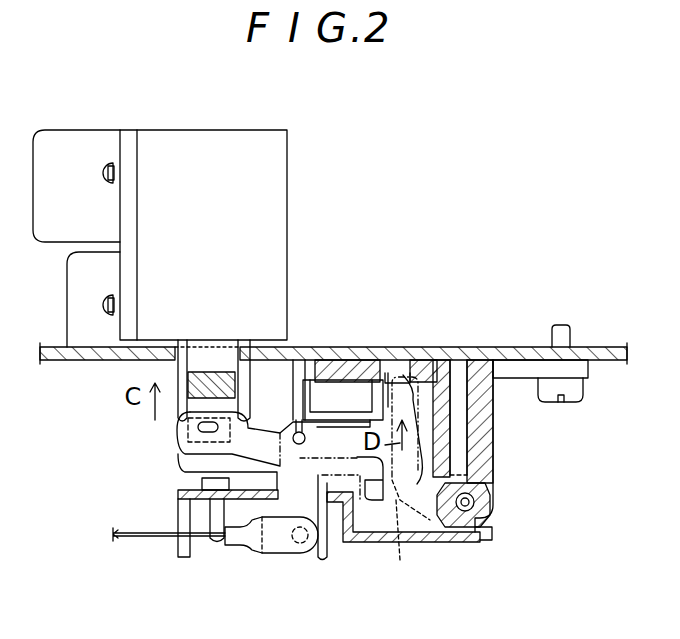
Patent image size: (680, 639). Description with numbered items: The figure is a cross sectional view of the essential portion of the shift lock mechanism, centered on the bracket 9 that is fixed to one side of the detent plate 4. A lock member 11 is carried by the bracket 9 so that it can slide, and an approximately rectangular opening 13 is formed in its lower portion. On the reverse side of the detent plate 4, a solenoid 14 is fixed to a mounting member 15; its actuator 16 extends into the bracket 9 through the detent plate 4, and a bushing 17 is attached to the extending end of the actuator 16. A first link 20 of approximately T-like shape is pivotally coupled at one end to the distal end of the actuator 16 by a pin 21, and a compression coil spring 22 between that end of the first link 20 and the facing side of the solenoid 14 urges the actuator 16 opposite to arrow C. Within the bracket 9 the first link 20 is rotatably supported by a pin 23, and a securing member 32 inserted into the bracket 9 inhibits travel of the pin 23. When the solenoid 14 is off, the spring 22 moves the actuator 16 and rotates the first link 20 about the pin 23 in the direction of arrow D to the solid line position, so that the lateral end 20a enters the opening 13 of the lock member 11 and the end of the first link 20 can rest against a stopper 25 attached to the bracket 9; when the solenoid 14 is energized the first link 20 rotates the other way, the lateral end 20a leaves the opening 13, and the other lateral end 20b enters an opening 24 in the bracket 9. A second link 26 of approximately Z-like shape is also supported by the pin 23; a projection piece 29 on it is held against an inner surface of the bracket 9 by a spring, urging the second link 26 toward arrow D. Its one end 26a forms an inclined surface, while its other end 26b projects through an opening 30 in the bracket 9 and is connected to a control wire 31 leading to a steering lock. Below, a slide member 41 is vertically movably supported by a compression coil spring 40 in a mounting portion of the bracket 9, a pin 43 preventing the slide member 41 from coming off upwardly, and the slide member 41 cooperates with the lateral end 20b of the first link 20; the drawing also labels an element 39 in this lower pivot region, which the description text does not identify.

The detent plate 4 is at (507, 347).
The bracket 9 is at (493, 416).
The lock member 11 is at (313, 350).
The opening 13 is at (420, 365).
The solenoid 14 is at (236, 130).
The mounting member 15 is at (120, 207).
The actuator 16 is at (188, 372).
The bushing 17 is at (205, 423).
The first link 20 is at (188, 488).
The lateral end 20a is at (408, 373).
The lateral end 20b is at (395, 542).
The pin 21 is at (190, 450).
The compression coil spring 22 is at (252, 422).
The pin 23 is at (308, 430).
The opening 24 is at (372, 542).
The stopper 25 is at (200, 492).
The second link 26 is at (327, 540).
The one end 26a is at (350, 360).
The other end 26b is at (300, 555).
The projection piece 29 is at (340, 542).
The opening 30 is at (255, 545).
The control wire 31 is at (148, 540).
The securing member 32 is at (280, 353).
The pivot block 39 is at (483, 490).
The compression coil spring 40 is at (475, 502).
The slide member 41 is at (487, 520).
The pin 43 is at (457, 372).